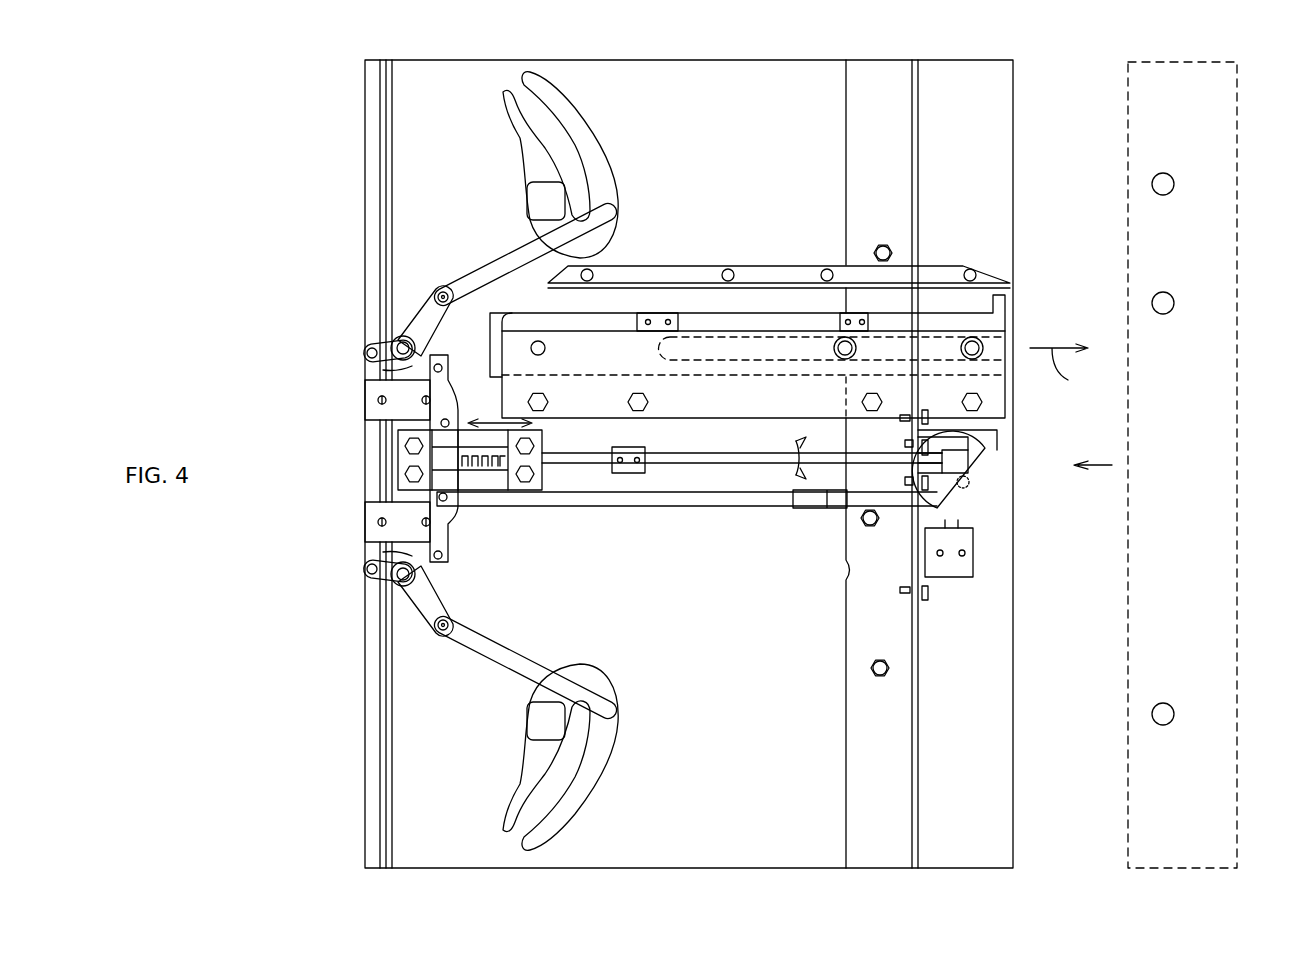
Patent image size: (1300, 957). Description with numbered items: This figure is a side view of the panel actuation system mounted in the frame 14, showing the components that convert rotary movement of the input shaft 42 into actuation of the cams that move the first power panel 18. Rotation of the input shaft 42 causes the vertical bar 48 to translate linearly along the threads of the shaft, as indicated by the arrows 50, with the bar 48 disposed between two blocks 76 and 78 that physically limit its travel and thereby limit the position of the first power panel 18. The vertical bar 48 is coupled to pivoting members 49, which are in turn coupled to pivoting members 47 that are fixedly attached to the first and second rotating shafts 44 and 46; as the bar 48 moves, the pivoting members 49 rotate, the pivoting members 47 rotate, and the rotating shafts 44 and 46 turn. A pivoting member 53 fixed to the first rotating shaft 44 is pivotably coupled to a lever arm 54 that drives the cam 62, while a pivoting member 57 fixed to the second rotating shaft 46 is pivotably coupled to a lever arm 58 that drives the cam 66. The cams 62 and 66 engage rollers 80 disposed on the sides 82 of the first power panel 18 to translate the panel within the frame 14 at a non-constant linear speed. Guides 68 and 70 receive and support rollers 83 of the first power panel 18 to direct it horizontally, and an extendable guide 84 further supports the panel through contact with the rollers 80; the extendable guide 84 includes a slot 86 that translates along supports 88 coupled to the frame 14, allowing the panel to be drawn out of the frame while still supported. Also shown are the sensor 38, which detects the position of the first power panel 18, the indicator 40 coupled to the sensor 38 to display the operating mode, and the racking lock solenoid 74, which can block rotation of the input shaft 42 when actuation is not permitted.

The frame 14 is at (381, 138).
The first power panel 18 is at (1098, 112).
The sensor 38 is at (716, 498).
The indicator 40 is at (975, 508).
The input shaft 42 is at (694, 458).
The first rotating shaft 44 is at (397, 340).
The second rotating shaft 46 is at (390, 598).
The pivoting member 47 is at (382, 358).
The vertical bar 48 is at (446, 405).
The pivoting member 49 is at (427, 360).
The arrows 50 is at (503, 418).
The pivoting member 53 is at (432, 300).
The lever arm 54 is at (505, 262).
The pivoting member 57 is at (432, 600).
The lever arm 58 is at (510, 660).
The cam 62 is at (530, 150).
The cam 66 is at (530, 765).
The guide 68 is at (1000, 398).
The guide 70 is at (976, 278).
The racking lock solenoid 74 is at (950, 582).
The block 76 is at (398, 465).
The block 78 is at (538, 450).
The rollers 80 is at (1176, 183).
The sides 82 is at (1212, 110).
The rollers 83 is at (1176, 303).
The extendable guide 84 is at (496, 320).
The slot 86 is at (655, 345).
The supports 88 is at (965, 343).